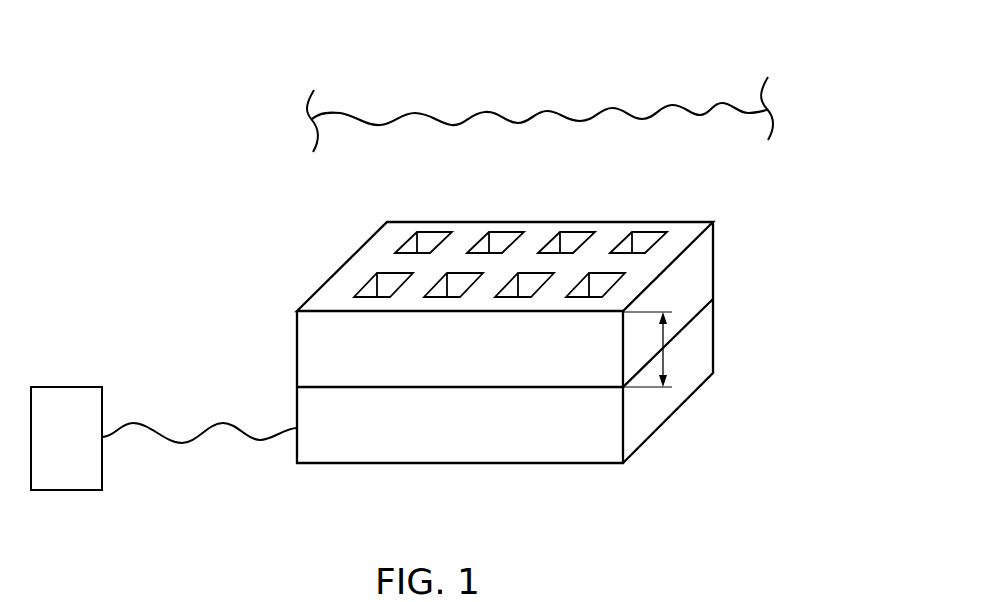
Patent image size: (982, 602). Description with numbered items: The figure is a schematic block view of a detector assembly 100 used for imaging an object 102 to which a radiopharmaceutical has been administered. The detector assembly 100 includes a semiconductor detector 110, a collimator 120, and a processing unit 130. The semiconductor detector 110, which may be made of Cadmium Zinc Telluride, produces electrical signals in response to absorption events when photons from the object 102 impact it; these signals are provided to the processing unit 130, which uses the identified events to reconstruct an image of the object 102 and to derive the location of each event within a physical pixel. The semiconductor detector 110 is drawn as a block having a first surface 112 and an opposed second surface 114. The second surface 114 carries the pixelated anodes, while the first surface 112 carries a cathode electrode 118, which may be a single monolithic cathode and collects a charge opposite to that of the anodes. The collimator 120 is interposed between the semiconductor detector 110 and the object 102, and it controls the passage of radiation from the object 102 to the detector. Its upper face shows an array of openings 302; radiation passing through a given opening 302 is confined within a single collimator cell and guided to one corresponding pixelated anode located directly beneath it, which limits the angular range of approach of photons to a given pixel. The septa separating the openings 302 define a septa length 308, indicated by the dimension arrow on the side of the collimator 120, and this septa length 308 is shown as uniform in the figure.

The detector assembly 100 is at (680, 52).
The object being imaged 102 is at (547, 115).
The semiconductor detector 110 is at (707, 338).
The first surface 112 is at (670, 435).
The second surface 114 is at (330, 372).
The cathode electrode 118 is at (533, 463).
The collimator 120 is at (707, 265).
The processing unit 130 is at (86, 451).
The openings 302 is at (575, 240).
The septa length 308 is at (663, 352).